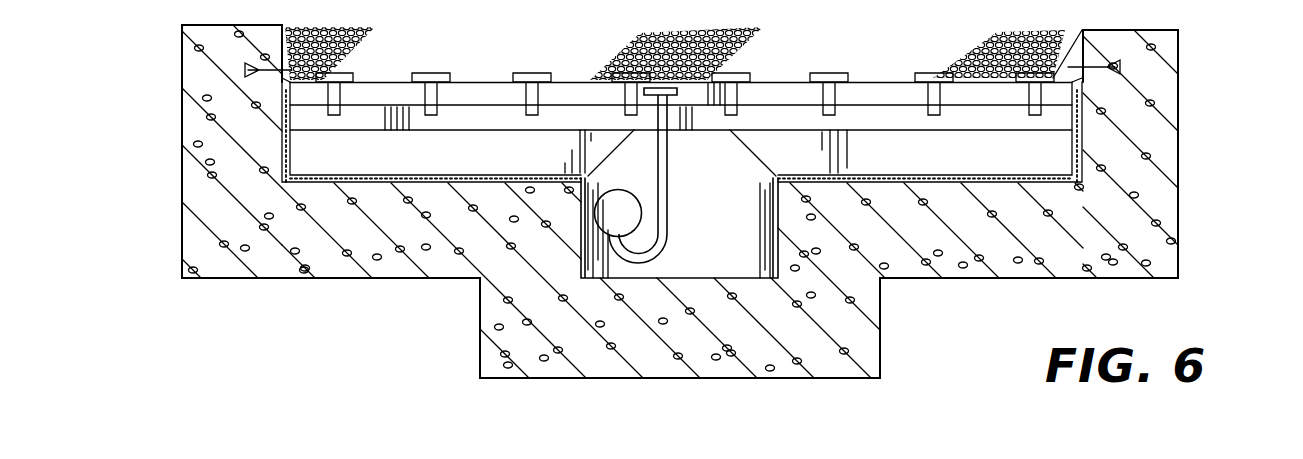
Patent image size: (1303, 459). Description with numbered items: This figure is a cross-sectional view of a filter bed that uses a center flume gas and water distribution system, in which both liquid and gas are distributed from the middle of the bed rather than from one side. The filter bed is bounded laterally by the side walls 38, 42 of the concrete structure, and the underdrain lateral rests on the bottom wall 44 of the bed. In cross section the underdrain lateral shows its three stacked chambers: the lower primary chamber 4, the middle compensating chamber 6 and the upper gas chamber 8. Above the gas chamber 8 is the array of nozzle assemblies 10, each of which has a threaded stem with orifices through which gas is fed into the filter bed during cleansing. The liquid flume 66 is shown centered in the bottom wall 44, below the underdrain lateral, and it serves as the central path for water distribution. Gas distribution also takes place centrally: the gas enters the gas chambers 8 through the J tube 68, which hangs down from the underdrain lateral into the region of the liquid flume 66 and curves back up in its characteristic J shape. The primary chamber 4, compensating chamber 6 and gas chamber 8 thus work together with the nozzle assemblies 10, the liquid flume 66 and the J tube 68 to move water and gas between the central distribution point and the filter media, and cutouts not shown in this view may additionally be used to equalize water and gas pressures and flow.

The primary chamber 4 is at (477, 143).
The compensating chamber 6 is at (875, 113).
The gas chamber 8 is at (768, 88).
The nozzle assembly 10 is at (537, 72).
The side wall 38 is at (190, 138).
The side wall 42 is at (1163, 110).
The bottom wall 44 is at (873, 325).
The liquid flume 66 is at (713, 267).
The J tube 68 is at (660, 217).